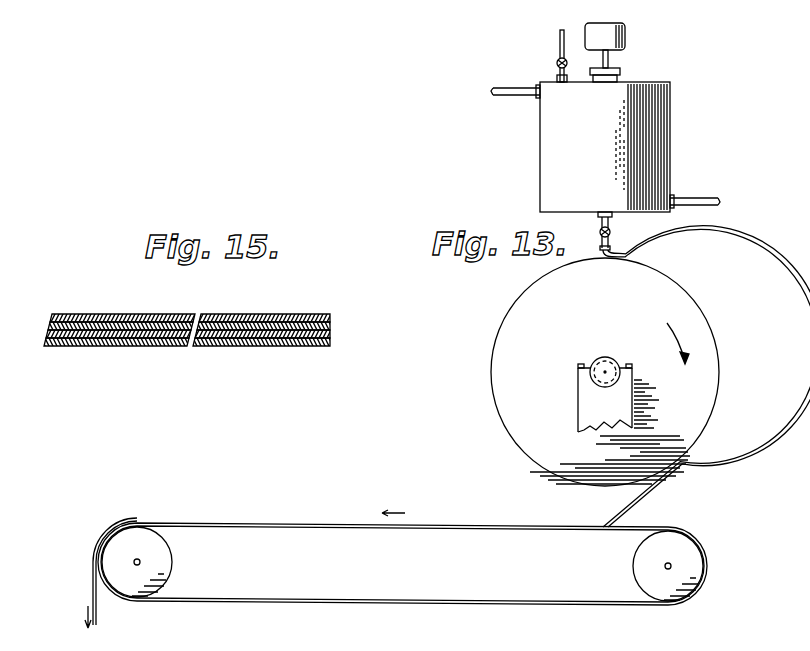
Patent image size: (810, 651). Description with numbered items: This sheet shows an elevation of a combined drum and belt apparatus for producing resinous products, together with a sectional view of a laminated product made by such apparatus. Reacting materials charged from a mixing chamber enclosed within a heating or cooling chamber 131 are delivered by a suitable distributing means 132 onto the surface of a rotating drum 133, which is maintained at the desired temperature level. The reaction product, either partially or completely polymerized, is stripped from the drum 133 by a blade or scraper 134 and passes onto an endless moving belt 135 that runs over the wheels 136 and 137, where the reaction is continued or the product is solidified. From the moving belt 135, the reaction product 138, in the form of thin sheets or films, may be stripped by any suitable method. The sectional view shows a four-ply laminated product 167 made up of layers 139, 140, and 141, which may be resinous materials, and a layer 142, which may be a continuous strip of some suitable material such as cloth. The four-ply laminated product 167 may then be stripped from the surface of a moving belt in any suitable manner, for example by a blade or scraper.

In FIG. 13, the heating or cooling chamber 131 is at (668, 168).
In FIG. 13, the distributing means 132 is at (612, 246).
In FIG. 13, the rotating drum 133 is at (510, 326).
In FIG. 13, the blade or scraper 134 is at (612, 496).
In FIG. 13, the endless moving belt 135 is at (645, 527).
In FIG. 13, the wheel 136 is at (688, 550).
In FIG. 13, the wheel 137 is at (118, 545).
In FIG. 13, the reaction product 138 is at (93, 598).
In FIG. 15, the layer 139 is at (331, 344).
In FIG. 15, the layer 140 is at (331, 334).
In FIG. 15, the layer 141 is at (322, 316).
In FIG. 15, the layer 142 is at (331, 324).
In FIG. 15, the four-ply laminated product 167 is at (196, 319).